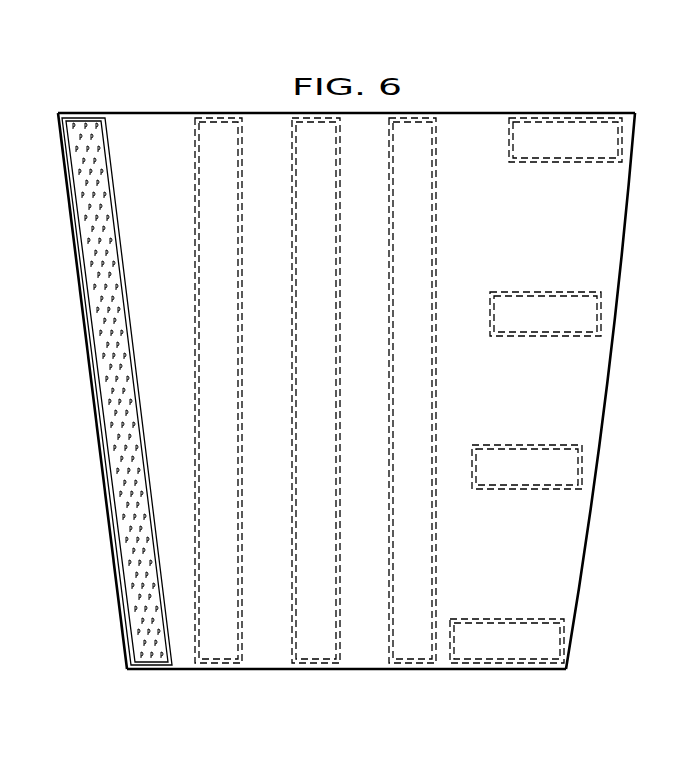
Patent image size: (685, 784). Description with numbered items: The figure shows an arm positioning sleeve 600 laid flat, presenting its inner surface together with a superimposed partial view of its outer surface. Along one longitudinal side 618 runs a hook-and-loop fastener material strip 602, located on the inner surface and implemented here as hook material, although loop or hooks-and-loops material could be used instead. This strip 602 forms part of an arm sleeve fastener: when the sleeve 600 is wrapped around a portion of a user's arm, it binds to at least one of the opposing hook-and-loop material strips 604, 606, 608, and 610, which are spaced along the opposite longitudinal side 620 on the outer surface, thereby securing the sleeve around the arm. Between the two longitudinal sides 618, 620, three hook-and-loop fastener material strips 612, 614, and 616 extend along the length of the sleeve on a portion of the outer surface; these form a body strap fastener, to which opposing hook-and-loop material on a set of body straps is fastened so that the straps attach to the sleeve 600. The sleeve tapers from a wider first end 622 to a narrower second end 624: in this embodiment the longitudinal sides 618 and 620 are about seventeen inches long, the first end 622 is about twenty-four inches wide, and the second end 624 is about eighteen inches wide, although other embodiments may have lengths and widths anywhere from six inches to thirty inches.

The arm positioning sleeve 600 is at (345, 374).
The hook-and-loop fastener material strip 602 is at (137, 612).
The opposing hook-and-loop material strip 604 is at (597, 160).
The opposing hook-and-loop material strip 606 is at (530, 298).
The opposing hook-and-loop material strip 608 is at (548, 480).
The opposing hook-and-loop material strip 610 is at (492, 622).
The hook-and-loop fastener material strip 612 is at (208, 182).
The hook-and-loop fastener material strip 614 is at (316, 660).
The hook-and-loop fastener material strip 616 is at (430, 210).
The longitudinal side 618 is at (90, 383).
The longitudinal side 620 is at (603, 428).
The first end 622 is at (170, 113).
The second end 624 is at (262, 669).